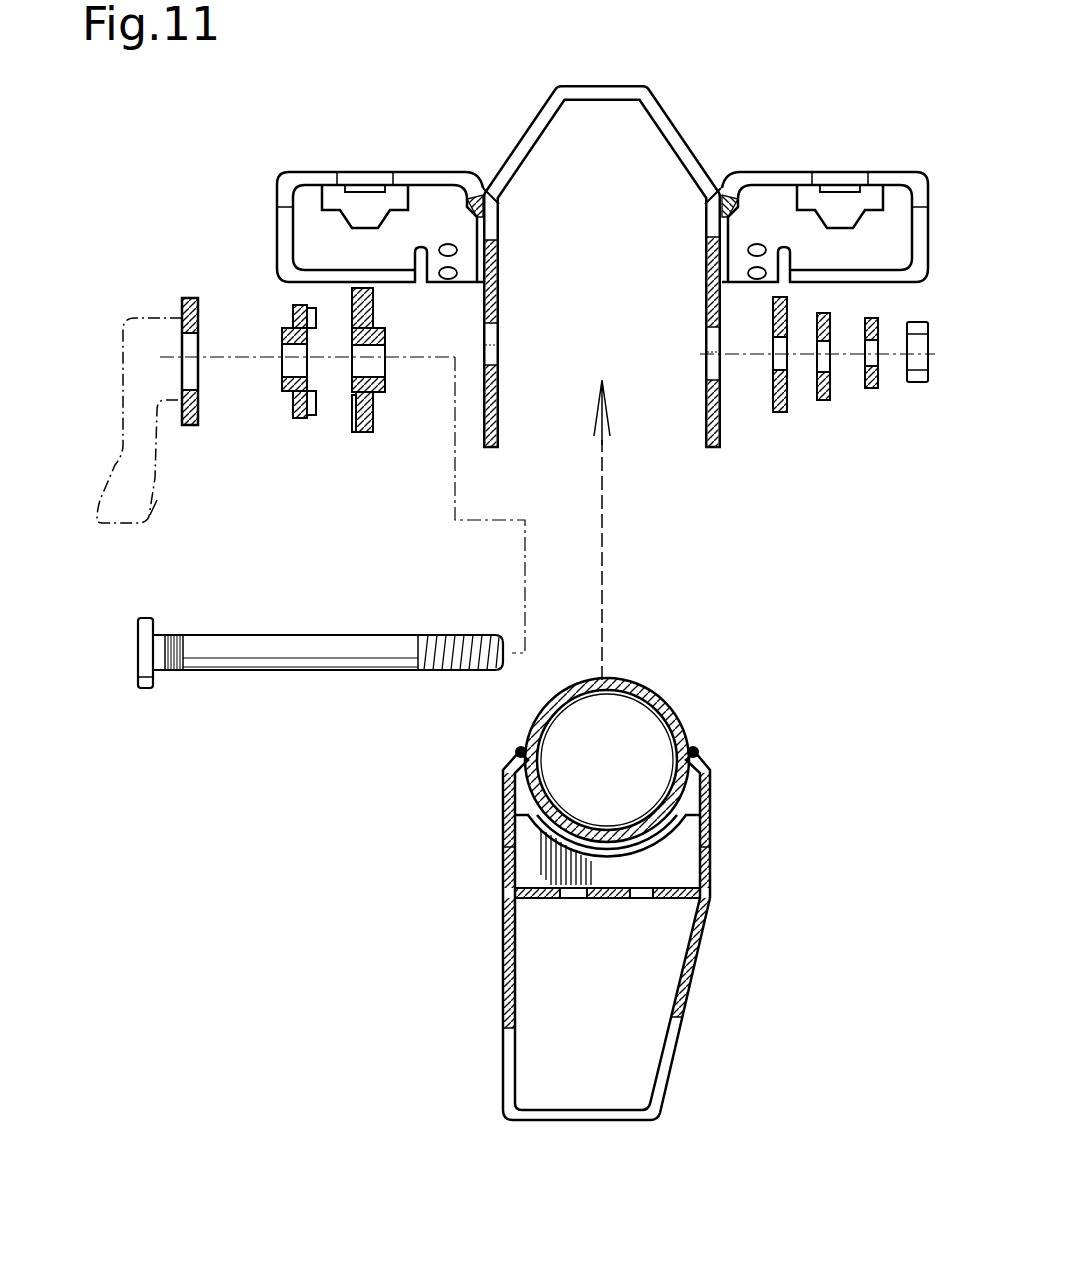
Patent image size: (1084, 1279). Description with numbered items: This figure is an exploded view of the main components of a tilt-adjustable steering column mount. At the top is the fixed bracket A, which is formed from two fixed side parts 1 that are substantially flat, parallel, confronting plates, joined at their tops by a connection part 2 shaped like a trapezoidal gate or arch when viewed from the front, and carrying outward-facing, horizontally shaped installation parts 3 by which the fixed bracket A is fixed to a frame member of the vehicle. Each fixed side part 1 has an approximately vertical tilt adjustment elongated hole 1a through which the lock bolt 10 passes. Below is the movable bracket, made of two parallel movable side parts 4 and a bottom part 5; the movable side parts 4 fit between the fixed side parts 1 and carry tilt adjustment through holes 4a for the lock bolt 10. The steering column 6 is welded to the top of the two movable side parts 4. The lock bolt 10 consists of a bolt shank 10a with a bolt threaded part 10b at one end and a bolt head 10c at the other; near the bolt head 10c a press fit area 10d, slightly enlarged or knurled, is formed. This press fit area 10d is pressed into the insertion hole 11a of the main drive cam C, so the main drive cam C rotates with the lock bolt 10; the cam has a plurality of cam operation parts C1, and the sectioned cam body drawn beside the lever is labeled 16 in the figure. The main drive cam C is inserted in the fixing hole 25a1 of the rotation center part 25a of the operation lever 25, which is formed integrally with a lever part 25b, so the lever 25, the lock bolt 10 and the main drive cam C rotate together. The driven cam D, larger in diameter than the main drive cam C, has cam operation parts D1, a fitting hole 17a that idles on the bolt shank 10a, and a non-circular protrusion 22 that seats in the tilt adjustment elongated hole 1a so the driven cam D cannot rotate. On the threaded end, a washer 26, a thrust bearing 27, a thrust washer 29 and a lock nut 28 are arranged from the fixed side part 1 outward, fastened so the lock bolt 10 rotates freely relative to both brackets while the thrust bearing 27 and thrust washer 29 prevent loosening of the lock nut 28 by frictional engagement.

The connection part 2 is at (628, 86).
The fixed bracket A is at (693, 124).
The installation part 3 is at (432, 170).
The fixed side part 1 is at (483, 305).
The tilt adjustment elongated hole 1a is at (500, 352).
The operation lever 25 is at (160, 312).
The fixing hole 25a1 is at (188, 340).
The rotation center part 25a is at (188, 398).
The lever part 25b is at (157, 511).
The insertion hole 11a is at (292, 348).
The fitting hole 17a is at (372, 348).
The spacer bushing 16 is at (285, 392).
The non-circular protrusion 22 is at (380, 394).
The main drive cam C is at (295, 425).
The cam operation part C1 is at (316, 426).
The cam operation part D1 is at (355, 436).
The driven cam D is at (378, 436).
The lock bolt 10 is at (386, 787).
The bolt shank 10a is at (388, 635).
The bolt threaded part 10b is at (455, 672).
The bolt head 10c is at (147, 690).
The press fit area 10d is at (180, 672).
The steering column 6 is at (676, 735).
The movable side part 4 is at (606, 936).
The tilt adjustment through hole 4a is at (513, 860).
The bottom part 5 is at (588, 1108).
The washer 26 is at (780, 413).
The thrust bearing 27 is at (826, 401).
The lock nut 28 is at (915, 383).
The thrust washer 29 is at (872, 390).